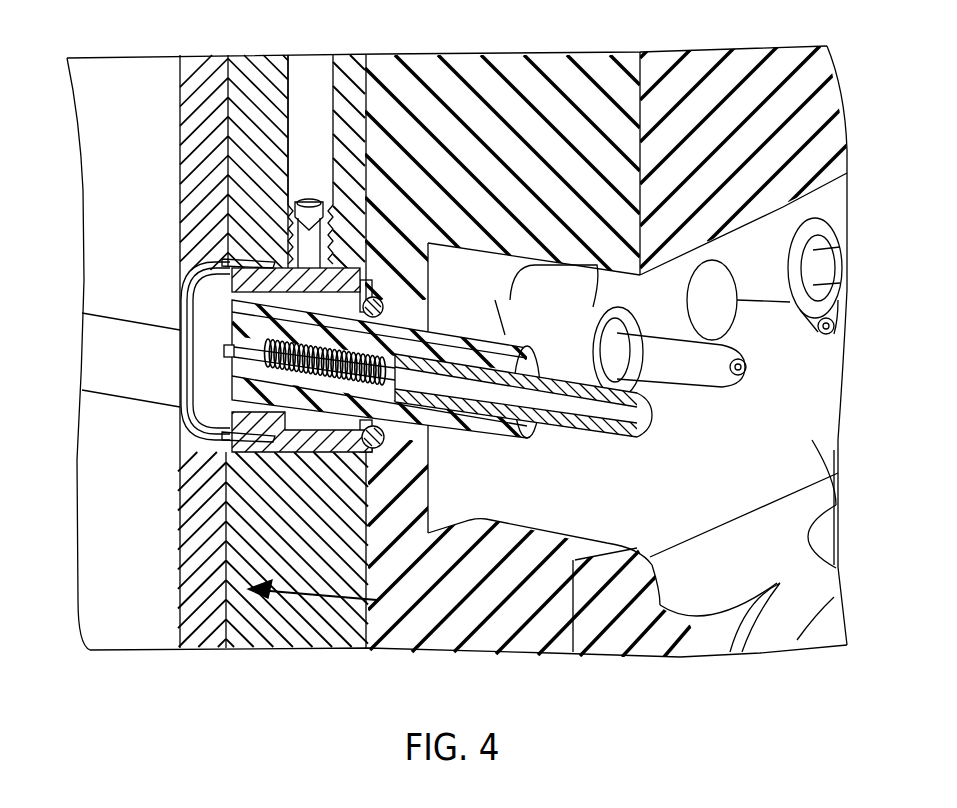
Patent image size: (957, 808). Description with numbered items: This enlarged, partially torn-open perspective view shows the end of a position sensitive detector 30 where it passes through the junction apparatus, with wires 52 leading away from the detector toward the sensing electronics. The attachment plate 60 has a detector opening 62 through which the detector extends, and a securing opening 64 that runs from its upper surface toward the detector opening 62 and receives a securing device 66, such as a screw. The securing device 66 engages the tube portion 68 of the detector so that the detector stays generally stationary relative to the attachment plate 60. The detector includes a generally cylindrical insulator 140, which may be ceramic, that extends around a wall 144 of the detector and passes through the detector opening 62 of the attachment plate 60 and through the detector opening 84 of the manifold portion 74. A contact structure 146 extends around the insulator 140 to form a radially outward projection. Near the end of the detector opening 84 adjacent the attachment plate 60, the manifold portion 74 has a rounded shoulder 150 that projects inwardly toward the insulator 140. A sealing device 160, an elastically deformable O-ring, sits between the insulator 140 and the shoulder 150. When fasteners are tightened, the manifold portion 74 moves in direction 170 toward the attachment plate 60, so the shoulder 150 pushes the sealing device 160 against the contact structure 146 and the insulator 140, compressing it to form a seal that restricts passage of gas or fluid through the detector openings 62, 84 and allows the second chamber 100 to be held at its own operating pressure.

The position sensitive detector 30 is at (97, 345).
The wires 52 is at (843, 452).
The attachment plate 60 is at (208, 74).
The detector opening 62 is at (260, 458).
The securing opening 64 is at (302, 72).
The securing device 66 is at (330, 214).
The tube portion 68 is at (214, 263).
The manifold portion 74 is at (557, 77).
The detector opening 84 is at (410, 485).
The second chamber 100 is at (683, 600).
The insulator 140 is at (200, 357).
The wall 144 is at (190, 428).
The contact structure 146 is at (333, 281).
The shoulder 150 is at (395, 282).
The sealing device 160 is at (382, 305).
The direction 170 is at (308, 603).